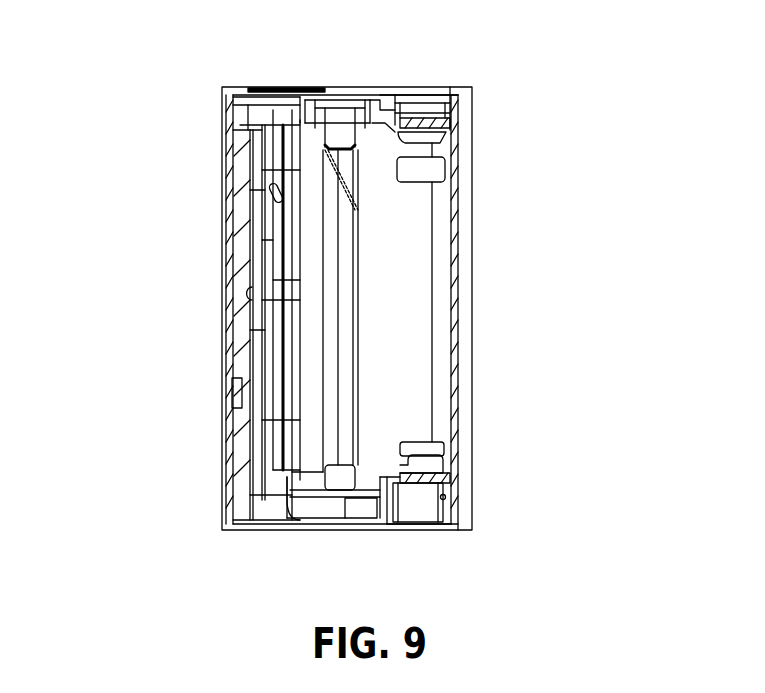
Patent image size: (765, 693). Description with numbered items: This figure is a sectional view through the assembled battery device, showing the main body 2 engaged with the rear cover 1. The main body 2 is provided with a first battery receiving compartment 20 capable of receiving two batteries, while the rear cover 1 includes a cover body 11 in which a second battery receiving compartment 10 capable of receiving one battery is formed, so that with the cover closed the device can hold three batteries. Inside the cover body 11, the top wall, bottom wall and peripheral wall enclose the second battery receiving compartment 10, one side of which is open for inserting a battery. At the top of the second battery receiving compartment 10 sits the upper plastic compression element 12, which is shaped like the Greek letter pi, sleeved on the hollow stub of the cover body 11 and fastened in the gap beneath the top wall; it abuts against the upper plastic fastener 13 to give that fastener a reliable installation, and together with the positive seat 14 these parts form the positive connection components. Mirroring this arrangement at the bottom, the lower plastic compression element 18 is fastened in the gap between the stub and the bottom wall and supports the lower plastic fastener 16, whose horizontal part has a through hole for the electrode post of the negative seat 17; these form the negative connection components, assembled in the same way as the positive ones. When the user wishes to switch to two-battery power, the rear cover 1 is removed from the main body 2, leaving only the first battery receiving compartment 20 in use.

The rear cover 1 is at (439, 308).
The main body 2 is at (183, 308).
The second battery receiving compartment 10 is at (417, 345).
The cover body 11 is at (465, 233).
The upper plastic compression element 12 is at (423, 104).
The upper plastic fastener 13 is at (435, 120).
The positive seat 14 is at (430, 140).
The lower plastic fastener 16 is at (448, 476).
The negative seat 17 is at (427, 465).
The lower plastic compression element 18 is at (425, 510).
The first battery receiving compartment 20 is at (333, 335).